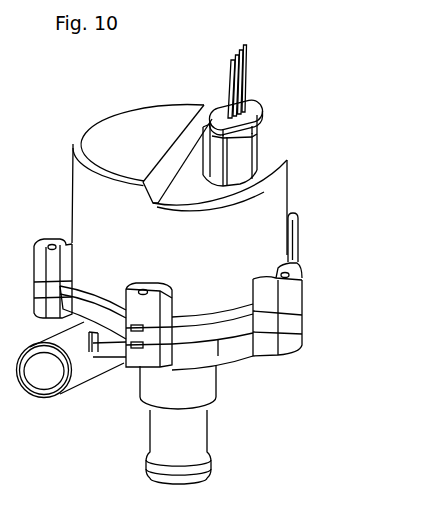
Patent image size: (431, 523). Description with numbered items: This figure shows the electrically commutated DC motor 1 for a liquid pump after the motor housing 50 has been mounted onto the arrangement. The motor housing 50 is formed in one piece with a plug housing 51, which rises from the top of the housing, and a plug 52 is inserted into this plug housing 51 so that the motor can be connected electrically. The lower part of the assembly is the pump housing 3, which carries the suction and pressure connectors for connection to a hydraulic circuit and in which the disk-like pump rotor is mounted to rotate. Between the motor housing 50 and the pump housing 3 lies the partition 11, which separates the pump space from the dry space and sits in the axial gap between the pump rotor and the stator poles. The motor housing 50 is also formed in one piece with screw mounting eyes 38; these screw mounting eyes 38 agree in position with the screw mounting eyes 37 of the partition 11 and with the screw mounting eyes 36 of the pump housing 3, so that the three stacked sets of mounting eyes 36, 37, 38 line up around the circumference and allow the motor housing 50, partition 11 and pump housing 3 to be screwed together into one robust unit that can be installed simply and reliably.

The electrically commutated DC motor 1 is at (169, 73).
The pump housing 3 is at (249, 364).
The partition 11 is at (219, 339).
The screw mounting eyes of the pump housing 36 is at (292, 340).
The screw mounting eyes of the partition 37 is at (292, 319).
The screw mounting eyes 38 is at (292, 295).
The motor housing 50 is at (289, 193).
The plug housing 51 is at (255, 146).
The plug 52 is at (245, 110).